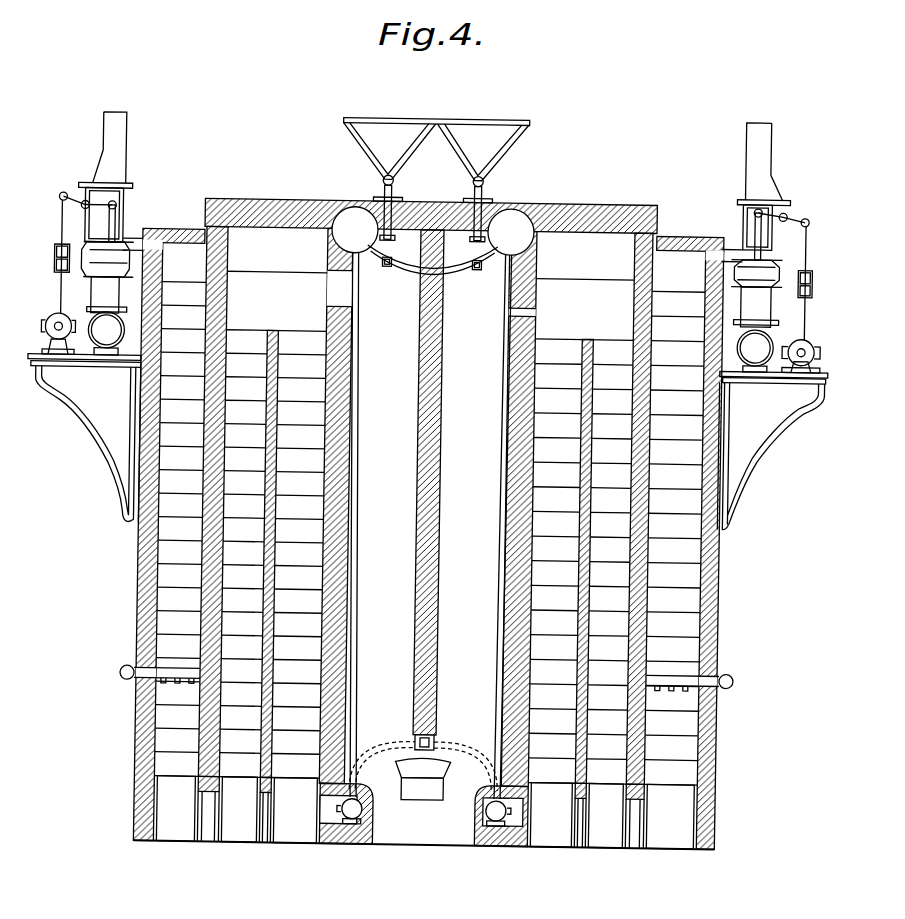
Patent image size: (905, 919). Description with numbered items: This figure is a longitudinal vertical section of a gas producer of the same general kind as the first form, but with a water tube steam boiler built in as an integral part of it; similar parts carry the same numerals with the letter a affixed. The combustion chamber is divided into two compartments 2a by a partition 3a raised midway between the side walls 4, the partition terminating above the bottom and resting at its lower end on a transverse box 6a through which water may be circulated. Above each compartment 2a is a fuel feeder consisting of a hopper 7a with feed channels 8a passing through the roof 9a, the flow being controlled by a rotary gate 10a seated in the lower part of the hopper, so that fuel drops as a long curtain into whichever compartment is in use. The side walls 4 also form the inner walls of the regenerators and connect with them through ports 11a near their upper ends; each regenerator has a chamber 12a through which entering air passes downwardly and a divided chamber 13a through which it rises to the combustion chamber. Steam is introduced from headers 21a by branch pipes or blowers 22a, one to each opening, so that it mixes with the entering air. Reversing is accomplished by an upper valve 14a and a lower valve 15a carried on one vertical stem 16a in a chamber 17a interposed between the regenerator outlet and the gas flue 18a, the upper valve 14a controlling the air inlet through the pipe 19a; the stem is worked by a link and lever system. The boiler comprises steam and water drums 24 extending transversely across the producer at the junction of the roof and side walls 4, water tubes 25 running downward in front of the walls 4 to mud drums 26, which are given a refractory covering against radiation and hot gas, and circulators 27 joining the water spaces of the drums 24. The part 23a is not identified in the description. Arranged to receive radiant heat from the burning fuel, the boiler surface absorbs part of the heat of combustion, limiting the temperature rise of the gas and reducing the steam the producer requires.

The combustion chamber compartment 2a is at (428, 507).
The partition 3a is at (444, 543).
The side wall 4 is at (360, 384).
The transverse box 6a is at (423, 737).
The hopper 7a is at (436, 150).
The feed channel 8a is at (393, 190).
The roof 9a is at (284, 204).
The rotary gate 10a is at (393, 180).
The port 11a is at (330, 294).
The regenerator chamber 12a is at (179, 562).
The divided chamber 13a is at (272, 557).
The upper valve 14a is at (100, 262).
The valve 15a is at (88, 310).
The vertical stem 16a is at (118, 230).
The valve chamber 17a is at (90, 290).
The gas flue 18a is at (106, 316).
The air inlet pipe 19a is at (112, 145).
The steam supply header 21a is at (127, 677).
The branch supply pipe 22a is at (172, 680).
The bottom plate 23a is at (423, 779).
The steam and water drum 24 is at (355, 212).
The water tube 25 is at (361, 412).
The mud drum 26 is at (374, 811).
The circulator 27 is at (410, 268).